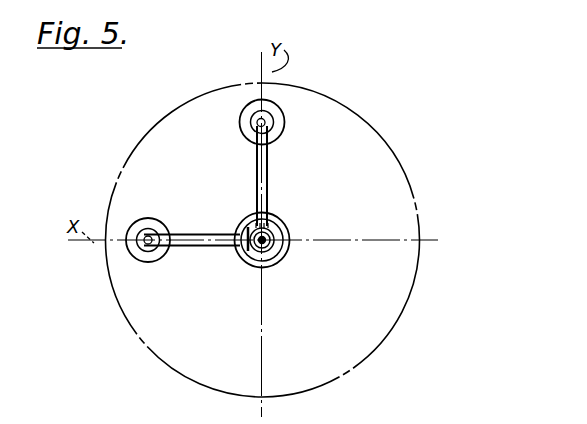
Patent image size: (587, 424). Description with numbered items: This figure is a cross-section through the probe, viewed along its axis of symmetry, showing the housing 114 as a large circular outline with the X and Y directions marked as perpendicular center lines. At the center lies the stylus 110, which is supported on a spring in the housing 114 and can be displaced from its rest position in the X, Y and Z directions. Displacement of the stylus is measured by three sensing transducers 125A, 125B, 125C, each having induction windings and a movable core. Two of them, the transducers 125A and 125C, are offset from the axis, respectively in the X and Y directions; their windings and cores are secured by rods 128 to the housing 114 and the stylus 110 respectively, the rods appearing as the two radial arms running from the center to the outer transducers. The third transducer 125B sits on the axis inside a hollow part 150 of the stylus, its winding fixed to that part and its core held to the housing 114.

The housing 114 is at (158, 356).
The spider arms 128 is at (257, 192).
The stylus 110 is at (304, 249).
The hollow part 150 is at (283, 258).
The sensing transducer 125A is at (152, 261).
The sensing transducer 125B is at (268, 236).
The sensing transducer 125C is at (282, 111).